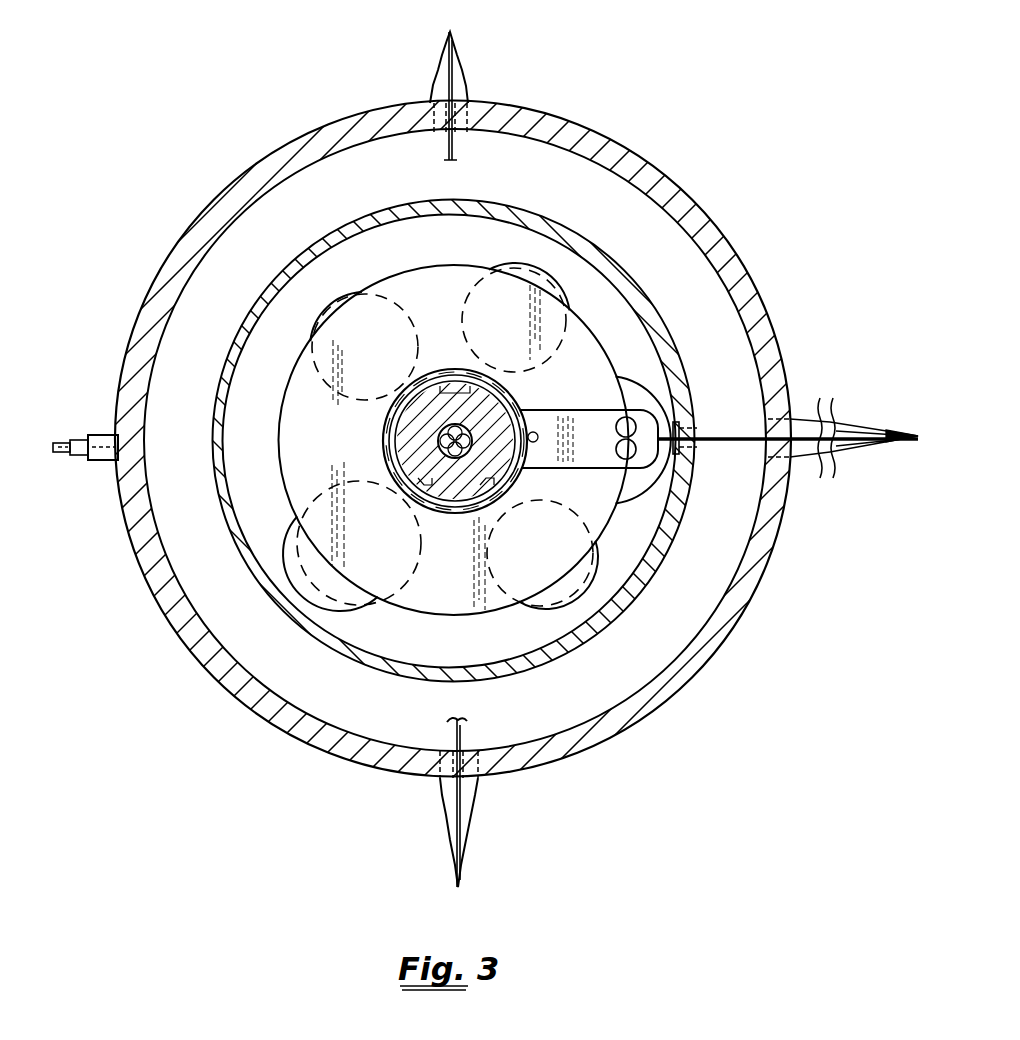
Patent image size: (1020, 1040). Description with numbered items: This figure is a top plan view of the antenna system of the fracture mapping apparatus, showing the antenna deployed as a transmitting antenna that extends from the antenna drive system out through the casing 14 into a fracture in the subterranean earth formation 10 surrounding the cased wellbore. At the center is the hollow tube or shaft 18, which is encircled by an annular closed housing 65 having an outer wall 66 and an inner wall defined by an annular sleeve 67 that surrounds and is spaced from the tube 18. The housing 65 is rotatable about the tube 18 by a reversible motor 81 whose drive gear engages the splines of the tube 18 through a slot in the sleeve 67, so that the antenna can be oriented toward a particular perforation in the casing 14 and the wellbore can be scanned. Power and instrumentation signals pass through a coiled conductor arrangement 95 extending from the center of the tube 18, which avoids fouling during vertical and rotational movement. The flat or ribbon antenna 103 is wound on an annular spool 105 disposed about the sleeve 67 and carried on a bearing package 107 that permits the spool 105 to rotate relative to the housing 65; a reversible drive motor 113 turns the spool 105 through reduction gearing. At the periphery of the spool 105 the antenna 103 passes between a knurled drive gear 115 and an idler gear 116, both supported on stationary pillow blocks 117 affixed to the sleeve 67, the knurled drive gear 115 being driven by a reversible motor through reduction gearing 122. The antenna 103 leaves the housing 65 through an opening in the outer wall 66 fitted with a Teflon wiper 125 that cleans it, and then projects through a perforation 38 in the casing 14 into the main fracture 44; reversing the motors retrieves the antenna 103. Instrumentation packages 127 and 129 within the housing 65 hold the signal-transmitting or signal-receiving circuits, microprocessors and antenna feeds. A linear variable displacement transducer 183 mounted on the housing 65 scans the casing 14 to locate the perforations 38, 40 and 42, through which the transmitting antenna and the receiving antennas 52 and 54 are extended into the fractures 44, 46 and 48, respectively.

The subterranean earth formation 10 is at (510, 520).
The casing 14 is at (708, 655).
The hollow tube or shaft 18 is at (441, 406).
The perforation 38 is at (793, 446).
The perforation 40 is at (441, 132).
The perforation 42 is at (446, 752).
The main fracture 44 is at (857, 447).
The fracture 46 is at (456, 88).
The fracture 48 is at (449, 806).
The receiving antenna 52 is at (447, 72).
The receiving antenna 54 is at (464, 838).
The annular closed housing 65 is at (213, 376).
The outer wall 66 is at (669, 332).
The annular sleeve 67 is at (388, 433).
The reversible motor 81 is at (292, 578).
The conductor arrangement 95 is at (535, 431).
The flat or ribbon antenna 103 is at (725, 443).
The annular spool 105 is at (287, 432).
The bearing package 107 is at (392, 488).
The reversible drive motor 113 is at (339, 304).
The knurled drive gear 115 is at (616, 456).
The idler gear 116 is at (618, 418).
The stationary pillow block 117 is at (557, 476).
The reduction gearing 122 is at (630, 500).
The wiper 125 is at (681, 425).
The instrumentation package 127 is at (546, 317).
The instrumentation package 129 is at (535, 608).
The linear variable displacement transducer 183 is at (87, 432).